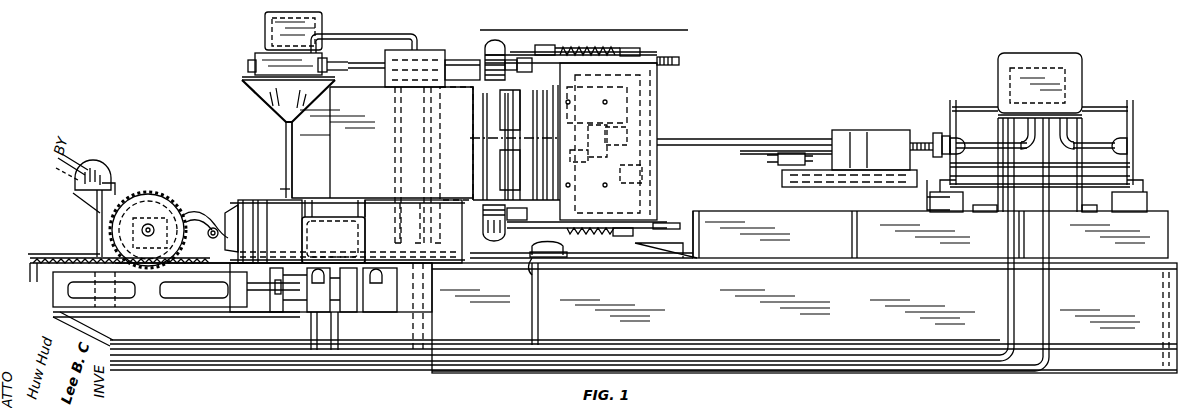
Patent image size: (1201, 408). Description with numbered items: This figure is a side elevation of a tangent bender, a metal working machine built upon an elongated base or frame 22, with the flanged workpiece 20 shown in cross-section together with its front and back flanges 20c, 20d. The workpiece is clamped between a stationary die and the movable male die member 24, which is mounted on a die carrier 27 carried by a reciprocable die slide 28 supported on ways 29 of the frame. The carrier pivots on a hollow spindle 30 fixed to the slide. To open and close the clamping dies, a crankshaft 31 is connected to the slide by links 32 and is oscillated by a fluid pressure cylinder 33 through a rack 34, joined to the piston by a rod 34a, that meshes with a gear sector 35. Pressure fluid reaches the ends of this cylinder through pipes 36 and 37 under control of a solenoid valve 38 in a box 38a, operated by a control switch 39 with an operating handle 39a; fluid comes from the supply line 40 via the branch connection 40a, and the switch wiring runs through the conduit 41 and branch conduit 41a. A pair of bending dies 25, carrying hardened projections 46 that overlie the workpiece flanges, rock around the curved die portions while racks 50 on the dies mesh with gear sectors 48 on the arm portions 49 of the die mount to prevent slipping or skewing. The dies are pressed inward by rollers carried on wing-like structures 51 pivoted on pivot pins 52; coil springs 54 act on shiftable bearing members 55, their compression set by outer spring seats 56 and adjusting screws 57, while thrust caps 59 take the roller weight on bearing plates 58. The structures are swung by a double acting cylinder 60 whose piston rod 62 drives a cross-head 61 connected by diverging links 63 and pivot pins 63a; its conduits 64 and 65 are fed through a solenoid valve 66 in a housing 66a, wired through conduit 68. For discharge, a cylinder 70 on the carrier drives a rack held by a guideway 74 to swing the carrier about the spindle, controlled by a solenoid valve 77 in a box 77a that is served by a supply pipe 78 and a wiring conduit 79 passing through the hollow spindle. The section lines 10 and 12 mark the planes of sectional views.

The apparatus section line 10 is at (478, 270).
The section line 12 is at (406, 28).
The flanged workpiece 20 is at (476, 176).
The front flange 20c is at (520, 82).
The back flange 20d is at (520, 158).
The base or frame 22 is at (1088, 362).
The male die member 24 is at (470, 138).
The bending dies 25 is at (577, 150).
The die carrier 27 is at (452, 72).
The die slide 28 is at (490, 305).
The ways 29 is at (540, 275).
The spindle 30 is at (390, 128).
The crankshaft 31 is at (152, 222).
The links 32 is at (200, 210).
The fluid pressure cylinder 33 is at (380, 262).
The rack 34 is at (45, 256).
The rod 34a is at (178, 300).
The gear sector 35 is at (133, 200).
The pipe 36 is at (358, 298).
The pipe 37 is at (295, 262).
The solenoid valve 38 is at (312, 142).
The housing or box 38a is at (340, 215).
The control switch 39 is at (104, 172).
The operating handle 39a is at (60, 172).
The fluid supply line 40 is at (402, 348).
The branch connection 40a is at (340, 345).
The conduit 41 is at (245, 345).
The branch conduit 41a is at (305, 328).
The flanges or projections 46 is at (560, 92).
The gear sectors 48 is at (498, 62).
The arm portions 49 is at (520, 228).
The racks 50 is at (528, 58).
The wing-like structures 51 is at (655, 118).
The pivot pins 52 is at (478, 80).
The coil springs 54 is at (610, 48).
The shiftable bearing members 55 is at (568, 50).
The outer spring seats 56 is at (635, 48).
The adjusting screws 57 is at (670, 66).
The bearing plates 58 is at (595, 262).
The thrust bearings or caps 59 is at (548, 262).
The double acting pressure fluid cylinder 60 is at (1100, 106).
The cross-head 61 is at (880, 130).
The piston rod 62 is at (923, 133).
The links 63 is at (712, 145).
The pivot pins 63a is at (595, 183).
The conduit 64 is at (1102, 138).
The conduit 65 is at (970, 115).
The solenoid valve 66 is at (1025, 60).
The box or housing 66a is at (1072, 58).
The conduit 68 is at (1007, 290).
The double acting fluid pressure cylinder 70 is at (255, 56).
The guideway 74 is at (392, 85).
The solenoid valve 77 is at (262, 18).
The box or housing 77a is at (274, 24).
The fluid pressure supply pipe 78 is at (332, 36).
The conduit 79 is at (430, 50).